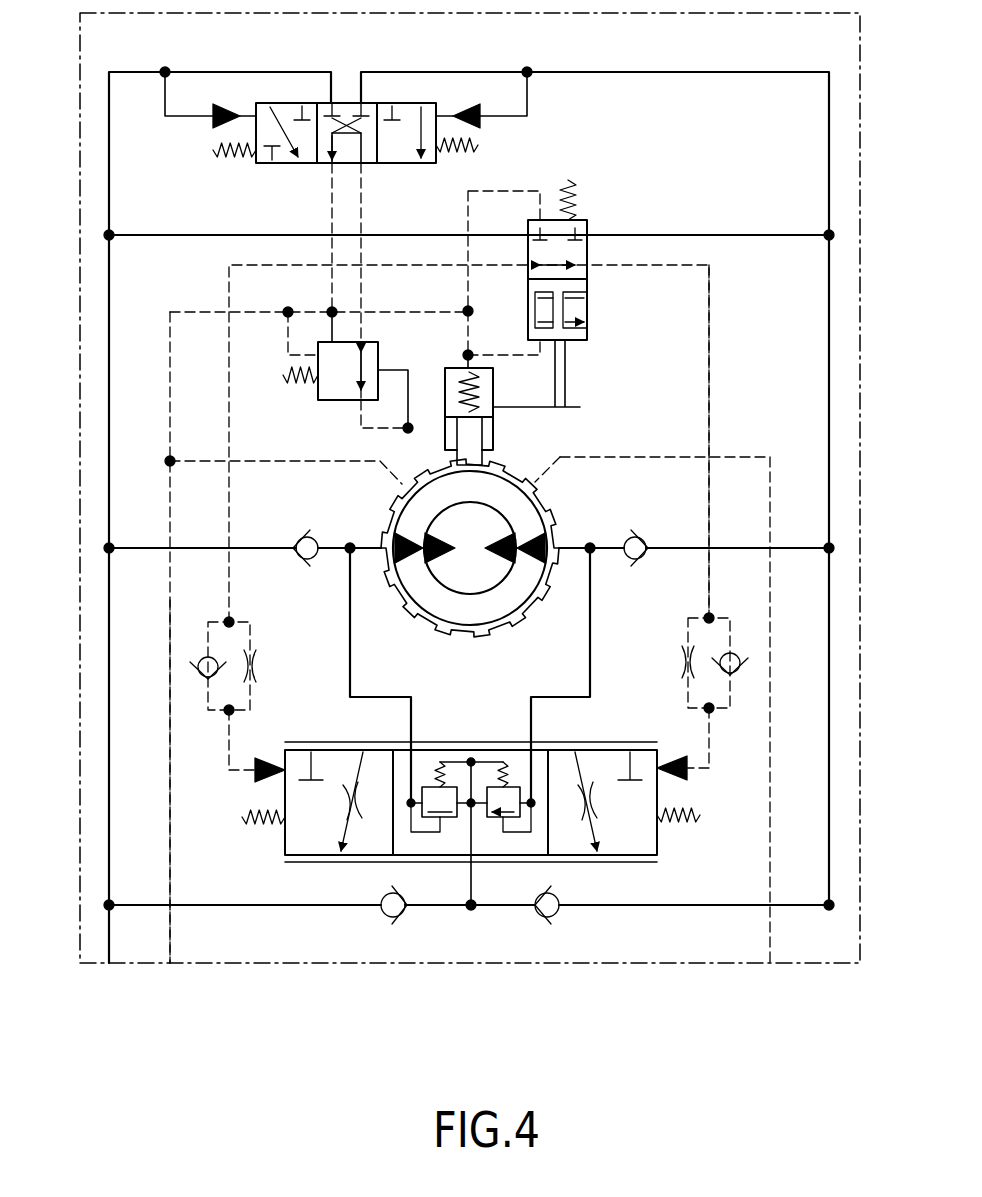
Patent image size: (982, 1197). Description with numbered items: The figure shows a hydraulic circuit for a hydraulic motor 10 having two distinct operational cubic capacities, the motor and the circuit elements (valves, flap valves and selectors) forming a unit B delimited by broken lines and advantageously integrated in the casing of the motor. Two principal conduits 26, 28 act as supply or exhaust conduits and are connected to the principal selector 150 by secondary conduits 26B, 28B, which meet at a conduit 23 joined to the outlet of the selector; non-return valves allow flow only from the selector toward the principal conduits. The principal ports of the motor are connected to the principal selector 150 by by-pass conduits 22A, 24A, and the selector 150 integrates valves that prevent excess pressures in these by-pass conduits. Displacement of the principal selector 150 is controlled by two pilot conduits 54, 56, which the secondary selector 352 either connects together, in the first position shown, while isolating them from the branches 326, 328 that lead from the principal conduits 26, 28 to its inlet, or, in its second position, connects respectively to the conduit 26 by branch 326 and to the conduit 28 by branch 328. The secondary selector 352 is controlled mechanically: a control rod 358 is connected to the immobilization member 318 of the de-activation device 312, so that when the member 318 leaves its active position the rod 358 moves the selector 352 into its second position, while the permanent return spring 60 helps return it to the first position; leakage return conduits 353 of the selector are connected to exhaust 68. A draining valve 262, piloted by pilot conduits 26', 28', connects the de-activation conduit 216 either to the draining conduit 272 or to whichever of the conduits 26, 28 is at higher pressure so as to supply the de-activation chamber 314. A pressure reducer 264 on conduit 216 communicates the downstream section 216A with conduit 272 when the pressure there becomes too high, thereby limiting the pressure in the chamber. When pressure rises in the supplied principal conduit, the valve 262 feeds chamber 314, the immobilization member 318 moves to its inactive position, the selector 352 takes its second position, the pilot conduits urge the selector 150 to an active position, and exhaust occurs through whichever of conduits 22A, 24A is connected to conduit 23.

The hydraulic motor 10 is at (543, 498).
The by-pass conduit 22A is at (590, 649).
The conduit 23 is at (472, 882).
The by-pass conduit 24A is at (352, 648).
The principal conduit 26 is at (631, 467).
The pilot conduit 26' is at (486, 119).
The secondary conduit 26B is at (676, 907).
The principal conduit 28 is at (177, 496).
The pilot conduit 28' is at (200, 123).
The secondary conduit 28B is at (273, 907).
The pilot conduit 54 is at (709, 310).
The pilot conduit 56 is at (228, 350).
The spring 60 is at (565, 182).
The exhaust 68 is at (170, 600).
The principal selector 150 is at (579, 736).
The de-activation conduit 216 is at (363, 295).
The section of conduit 216A is at (378, 432).
The draining valve 262 is at (391, 172).
The pressure reducer 264 is at (316, 408).
The draining conduit 272 is at (168, 393).
The de-activation device 312 is at (439, 364).
The de-activation chamber 314 is at (446, 432).
The immobilization member 318 is at (478, 436).
The branch 326 is at (707, 235).
The branch 328 is at (233, 235).
The secondary selector 352 is at (602, 292).
The leakage return conduits 353 is at (476, 355).
The control rod 358 is at (558, 373).
The unit B is at (858, 452).